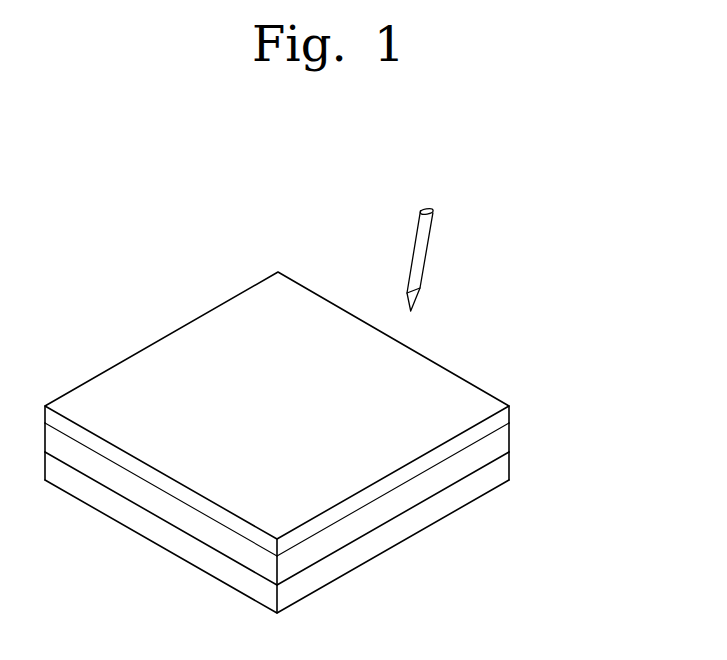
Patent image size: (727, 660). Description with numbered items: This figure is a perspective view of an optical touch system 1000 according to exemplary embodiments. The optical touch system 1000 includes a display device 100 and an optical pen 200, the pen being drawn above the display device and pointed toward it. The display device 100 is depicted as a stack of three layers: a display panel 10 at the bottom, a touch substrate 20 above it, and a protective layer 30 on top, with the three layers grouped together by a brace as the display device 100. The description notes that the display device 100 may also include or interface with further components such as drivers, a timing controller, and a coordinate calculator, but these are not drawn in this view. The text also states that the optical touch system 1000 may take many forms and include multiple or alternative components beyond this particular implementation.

The optical touch system 1000 is at (578, 241).
The optical pen 200 is at (427, 258).
The display device 100 is at (583, 407).
The protective layer 30 is at (502, 417).
The touch substrate 20 is at (502, 440).
The display panel 10 is at (502, 466).